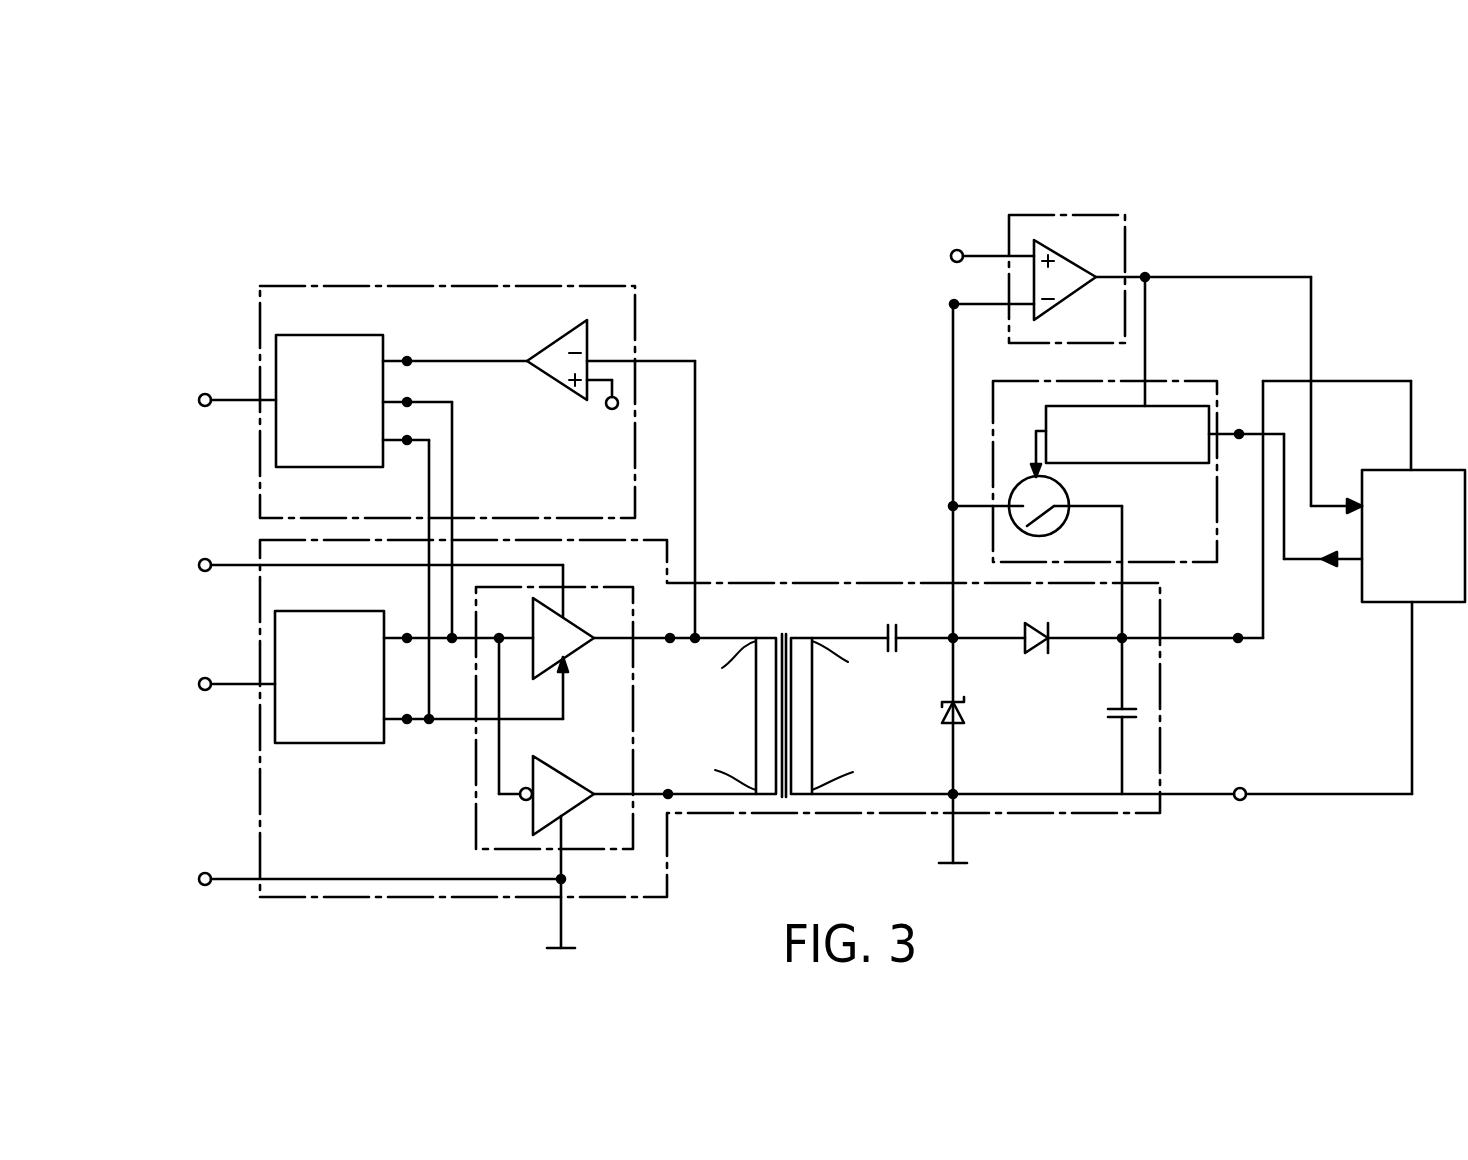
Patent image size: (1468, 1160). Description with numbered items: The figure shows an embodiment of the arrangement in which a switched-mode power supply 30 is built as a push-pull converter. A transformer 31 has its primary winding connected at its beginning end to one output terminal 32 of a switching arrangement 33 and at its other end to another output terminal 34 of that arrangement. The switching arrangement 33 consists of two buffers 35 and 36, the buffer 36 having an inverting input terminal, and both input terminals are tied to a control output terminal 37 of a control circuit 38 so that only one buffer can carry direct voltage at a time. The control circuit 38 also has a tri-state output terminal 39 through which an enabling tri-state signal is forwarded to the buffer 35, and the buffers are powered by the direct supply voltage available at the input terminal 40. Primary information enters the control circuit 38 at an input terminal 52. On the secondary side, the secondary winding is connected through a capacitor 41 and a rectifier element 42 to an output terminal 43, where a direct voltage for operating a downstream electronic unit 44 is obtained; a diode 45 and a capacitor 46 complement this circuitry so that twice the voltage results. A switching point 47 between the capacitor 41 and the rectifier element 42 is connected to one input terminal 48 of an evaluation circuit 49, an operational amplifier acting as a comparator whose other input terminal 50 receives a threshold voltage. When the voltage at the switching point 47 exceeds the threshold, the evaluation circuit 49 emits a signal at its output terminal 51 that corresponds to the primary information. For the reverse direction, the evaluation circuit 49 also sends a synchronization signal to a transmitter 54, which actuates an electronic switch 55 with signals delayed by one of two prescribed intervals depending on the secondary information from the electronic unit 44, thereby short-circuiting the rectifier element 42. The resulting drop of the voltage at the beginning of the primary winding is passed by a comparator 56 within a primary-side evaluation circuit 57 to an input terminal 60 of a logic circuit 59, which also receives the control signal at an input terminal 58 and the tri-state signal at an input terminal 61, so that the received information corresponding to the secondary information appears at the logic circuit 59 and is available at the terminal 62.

The switched-mode power supply 30 is at (328, 897).
The transformer 31 is at (783, 632).
The output terminal 32 is at (670, 640).
The switching arrangement 33 is at (476, 814).
The output terminal 34 is at (668, 792).
The buffer 35 is at (568, 645).
The buffer 36 is at (563, 786).
The control output terminal 37 is at (407, 638).
The control circuit 38 is at (314, 727).
The tri-state output terminal 39 is at (407, 719).
The input terminal 40 is at (207, 559).
The capacitor 41 is at (896, 651).
The rectifier element 42 is at (1030, 650).
The output terminal 43 is at (1238, 636).
The electronic unit 44 is at (1398, 587).
The diode 45 is at (965, 708).
The capacitor 46 is at (1110, 718).
The switching point 47 is at (953, 640).
The input terminal 48 is at (956, 306).
The evaluation circuit 49 is at (1118, 215).
The input terminal 50 is at (960, 251).
The output terminal 51 is at (1236, 277).
The input terminal 52 is at (205, 690).
The transmitter 54 is at (1204, 451).
The electronic switch 55 is at (1069, 500).
The comparator 56 is at (558, 372).
The evaluation circuit 57 is at (483, 286).
The input terminal 58 is at (407, 361).
The logic circuit 59 is at (314, 452).
The input terminal 60 is at (407, 402).
The input terminal 61 is at (407, 440).
The input terminal I4' 62 is at (207, 394).